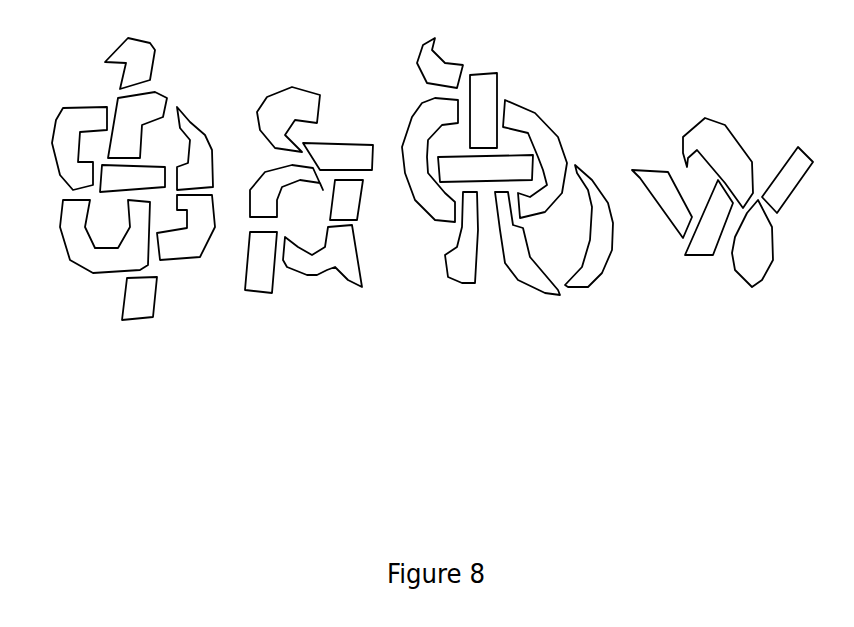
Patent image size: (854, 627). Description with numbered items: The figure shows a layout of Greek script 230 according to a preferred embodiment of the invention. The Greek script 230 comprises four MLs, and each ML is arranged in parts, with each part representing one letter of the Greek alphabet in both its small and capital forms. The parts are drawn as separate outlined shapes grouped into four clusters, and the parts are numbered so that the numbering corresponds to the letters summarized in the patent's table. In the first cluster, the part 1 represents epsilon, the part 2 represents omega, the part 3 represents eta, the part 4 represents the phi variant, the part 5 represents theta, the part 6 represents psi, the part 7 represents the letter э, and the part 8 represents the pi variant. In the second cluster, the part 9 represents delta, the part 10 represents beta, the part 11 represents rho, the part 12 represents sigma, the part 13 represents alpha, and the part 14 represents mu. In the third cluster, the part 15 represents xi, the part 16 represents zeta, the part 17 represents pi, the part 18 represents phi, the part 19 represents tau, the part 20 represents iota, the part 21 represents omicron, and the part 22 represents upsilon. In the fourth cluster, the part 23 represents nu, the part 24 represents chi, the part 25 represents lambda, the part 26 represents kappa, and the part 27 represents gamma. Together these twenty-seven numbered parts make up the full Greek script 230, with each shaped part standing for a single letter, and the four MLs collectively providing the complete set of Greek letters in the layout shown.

The part for letter epsilon 1 is at (79, 148).
The part for letter omega 2 is at (105, 236).
The part for letter eta 3 is at (130, 63).
The part for letter phi variant 4 is at (137, 125).
The part for letter theta 5 is at (132, 178).
The part for letter psi 6 is at (139, 298).
The part for letter э 7 is at (195, 148).
The part for letter pi variant 8 is at (186, 227).
The part for letter delta 9 is at (288, 119).
The part for letter beta 10 is at (286, 191).
The part for letter rho 11 is at (261, 262).
The part for letter sigma 12 is at (338, 156).
The part for letter alpha 13 is at (346, 200).
The part for letter mu 14 is at (322, 256).
The part for letter xi 15 is at (440, 63).
The part for letter zeta 16 is at (430, 160).
The part for letter pi 17 is at (461, 237).
The part for letter phi 18 is at (484, 110).
The part for letter tau 19 is at (485, 168).
The part for letter iota 20 is at (527, 243).
The part for letter omicron 21 is at (535, 159).
The part for letter upsilon 22 is at (589, 226).
The part for letter nu 23 is at (662, 204).
The part for letter chi 24 is at (718, 163).
The part for letter lambda 25 is at (709, 217).
The part for letter kappa 26 is at (787, 180).
The part for letter gamma 27 is at (752, 243).
The Greek script 230 is at (300, 359).